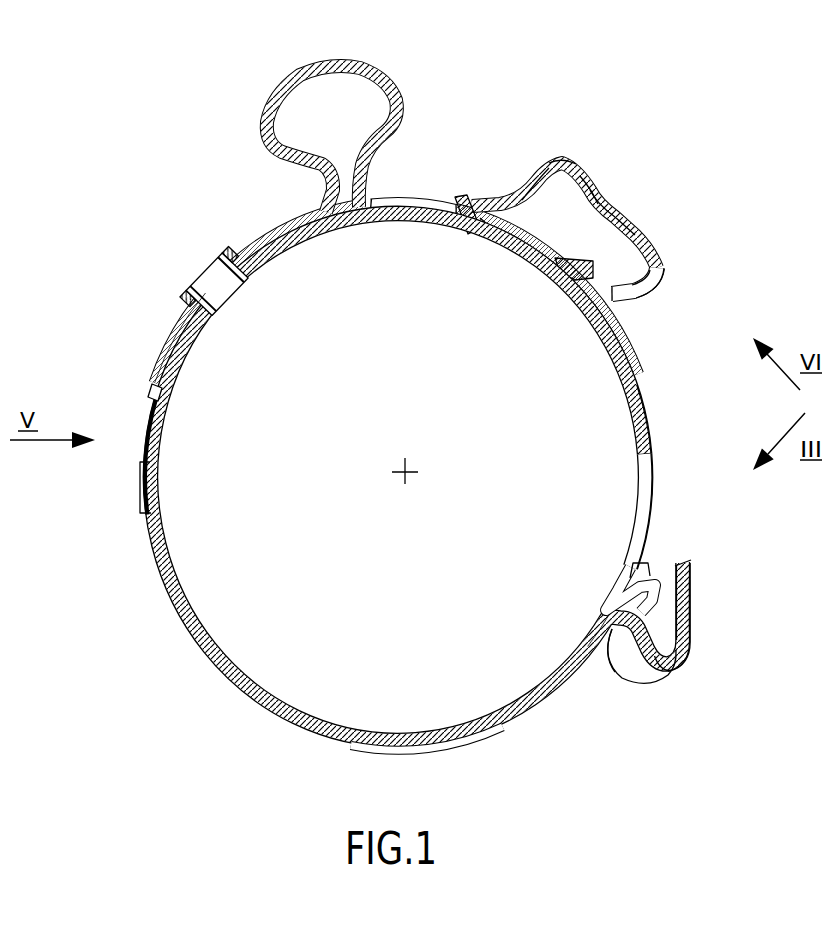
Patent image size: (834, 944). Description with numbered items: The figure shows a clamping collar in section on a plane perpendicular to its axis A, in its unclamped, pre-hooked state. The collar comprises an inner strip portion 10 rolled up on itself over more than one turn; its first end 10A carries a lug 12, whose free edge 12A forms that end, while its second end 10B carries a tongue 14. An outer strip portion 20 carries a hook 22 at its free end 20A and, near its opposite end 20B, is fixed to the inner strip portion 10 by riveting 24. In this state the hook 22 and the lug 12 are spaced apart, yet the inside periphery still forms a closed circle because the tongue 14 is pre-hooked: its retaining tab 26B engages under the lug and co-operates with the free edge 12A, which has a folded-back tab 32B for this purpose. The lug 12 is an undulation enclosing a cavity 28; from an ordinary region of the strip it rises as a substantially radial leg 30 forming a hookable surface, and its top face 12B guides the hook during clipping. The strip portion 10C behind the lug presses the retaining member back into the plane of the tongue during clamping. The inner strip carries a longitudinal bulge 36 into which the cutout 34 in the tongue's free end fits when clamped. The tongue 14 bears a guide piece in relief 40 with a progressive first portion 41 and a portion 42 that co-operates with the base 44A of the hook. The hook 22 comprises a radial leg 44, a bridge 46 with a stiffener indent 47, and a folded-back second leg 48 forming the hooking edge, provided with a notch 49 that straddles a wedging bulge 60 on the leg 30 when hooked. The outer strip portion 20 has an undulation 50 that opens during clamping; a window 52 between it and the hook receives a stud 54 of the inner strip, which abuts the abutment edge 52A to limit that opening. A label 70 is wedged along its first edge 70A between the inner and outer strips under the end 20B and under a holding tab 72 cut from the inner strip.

The inner strip portion 10 is at (280, 705).
The first end of the inner strip portion 10A is at (695, 667).
The second end of the inner strip portion 10B is at (623, 484).
The strip portion situated behind the lug 10C is at (543, 713).
The lug 12 is at (708, 637).
The free edge of the lug 12A is at (687, 560).
The top face of the lug 12B is at (693, 600).
The tongue 14 is at (650, 417).
The outer strip portion 20 is at (301, 226).
The free end of the outer strip portion 20A is at (670, 251).
The end of the outer strip portion opposite the hook 20B is at (180, 313).
The hook 22 is at (627, 195).
The riveting 24 is at (197, 247).
The retaining tab 26B is at (623, 580).
The cavity 28 is at (677, 660).
The leg of the lug 30 is at (627, 662).
The folded-back tab 32B is at (633, 557).
The cutout 34 is at (647, 480).
The longitudinal bulge 36 is at (400, 735).
The guide piece in relief 40 is at (614, 254).
The first portion of the embossed region 41 is at (633, 337).
The portion of the embossed region 42 is at (577, 277).
The leg of the hook 44 is at (533, 172).
The base of the hook 44A is at (520, 253).
The bridge of the hook 46 is at (573, 165).
The stiffener indent 47 is at (600, 200).
The second leg of the hook 48 is at (650, 284).
The notch in the hook 49 is at (640, 297).
The undulation 50 is at (254, 125).
The window 52 is at (420, 200).
The abutment edge of the window 52A is at (393, 212).
The stud 54 is at (472, 197).
The wedging bulge 60 is at (650, 677).
The label 70 is at (147, 437).
The first edge of the label 70A is at (152, 386).
The holding tab 72 is at (133, 497).
The axis of the collar A is at (403, 478).